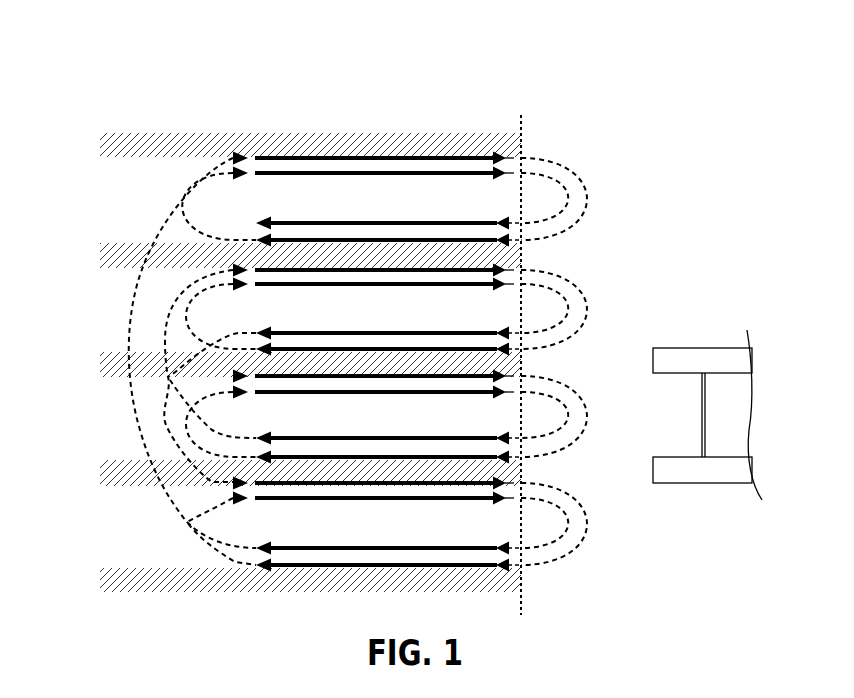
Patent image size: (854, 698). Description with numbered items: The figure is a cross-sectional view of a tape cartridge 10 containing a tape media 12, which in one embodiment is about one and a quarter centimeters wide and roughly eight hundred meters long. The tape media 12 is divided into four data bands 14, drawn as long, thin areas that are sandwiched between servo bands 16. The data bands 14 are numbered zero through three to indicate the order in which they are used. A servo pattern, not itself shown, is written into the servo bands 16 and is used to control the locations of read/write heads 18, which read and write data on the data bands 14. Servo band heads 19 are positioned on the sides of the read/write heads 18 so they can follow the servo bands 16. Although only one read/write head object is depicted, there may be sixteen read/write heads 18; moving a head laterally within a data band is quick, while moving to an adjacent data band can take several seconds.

The tape cartridge 10 is at (161, 86).
The tape media 12 is at (130, 321).
The data bands 14 is at (623, 200).
The servo bands 16 is at (522, 145).
The read/write heads 18 is at (725, 417).
The servo band heads 19 is at (737, 362).